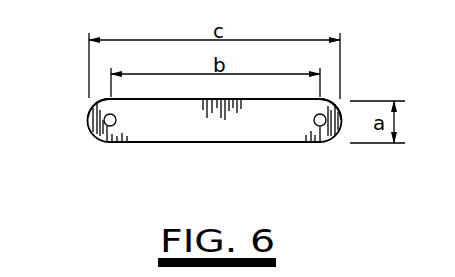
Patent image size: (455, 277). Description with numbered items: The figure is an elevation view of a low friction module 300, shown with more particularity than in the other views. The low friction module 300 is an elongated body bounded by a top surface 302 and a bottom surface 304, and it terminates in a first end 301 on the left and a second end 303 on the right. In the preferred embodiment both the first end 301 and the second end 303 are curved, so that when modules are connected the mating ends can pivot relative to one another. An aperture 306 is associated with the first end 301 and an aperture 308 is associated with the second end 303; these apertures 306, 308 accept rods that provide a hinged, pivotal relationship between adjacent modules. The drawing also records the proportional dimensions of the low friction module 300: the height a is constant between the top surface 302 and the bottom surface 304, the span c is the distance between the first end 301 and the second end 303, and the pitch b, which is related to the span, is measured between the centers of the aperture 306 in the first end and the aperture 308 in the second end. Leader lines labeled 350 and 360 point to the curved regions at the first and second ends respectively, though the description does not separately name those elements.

The low friction module 300 is at (351, 92).
The first end 301 is at (88, 122).
The top surface 302 is at (244, 99).
The second end 303 is at (343, 108).
The bottom surface 304 is at (193, 142).
The aperture 306 is at (103, 142).
The aperture 308 is at (321, 143).
The left rounded end 350 is at (89, 110).
The right rounded end 360 is at (334, 139).